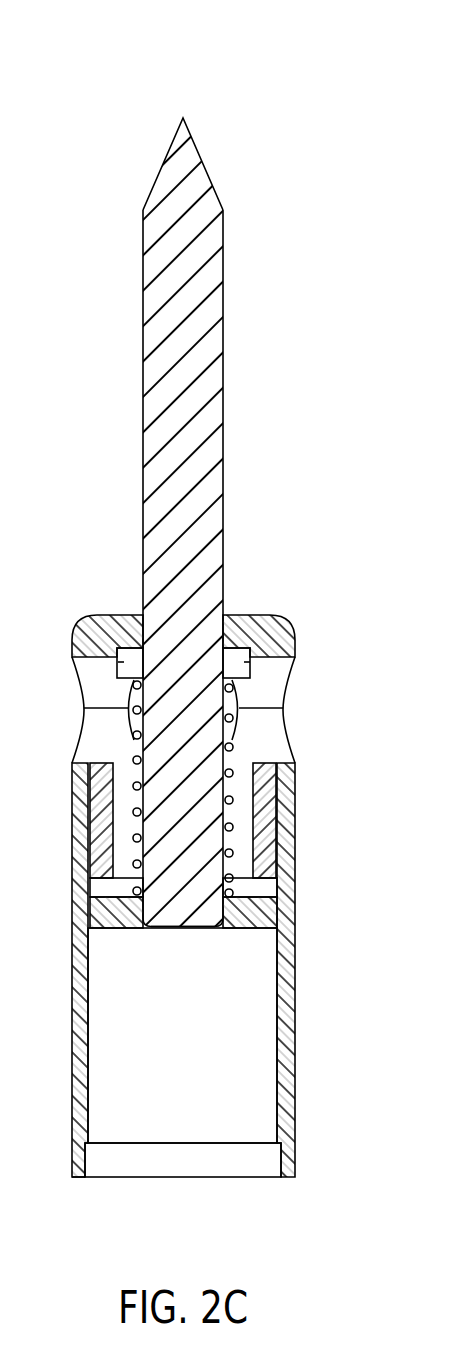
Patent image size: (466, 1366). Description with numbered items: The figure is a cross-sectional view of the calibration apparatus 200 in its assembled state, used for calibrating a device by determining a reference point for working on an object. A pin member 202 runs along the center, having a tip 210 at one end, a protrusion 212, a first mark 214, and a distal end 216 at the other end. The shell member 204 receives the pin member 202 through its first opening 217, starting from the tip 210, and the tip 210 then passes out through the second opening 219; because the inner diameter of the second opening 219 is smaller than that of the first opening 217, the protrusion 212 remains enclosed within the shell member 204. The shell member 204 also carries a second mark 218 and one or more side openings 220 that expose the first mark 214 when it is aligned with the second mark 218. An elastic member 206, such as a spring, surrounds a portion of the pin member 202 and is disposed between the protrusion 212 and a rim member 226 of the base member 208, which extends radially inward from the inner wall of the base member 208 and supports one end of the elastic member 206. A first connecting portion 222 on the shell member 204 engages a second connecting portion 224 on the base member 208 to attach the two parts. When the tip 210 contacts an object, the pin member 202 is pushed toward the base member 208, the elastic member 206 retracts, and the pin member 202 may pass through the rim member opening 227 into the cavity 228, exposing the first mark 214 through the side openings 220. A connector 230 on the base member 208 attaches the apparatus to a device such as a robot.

The calibration apparatus 200 is at (281, 73).
The pin member 202 is at (207, 279).
The tip 210 is at (183, 117).
The shell member 204 is at (111, 627).
The protrusion 212 is at (229, 656).
The first mark 214 is at (250, 663).
The second opening 219 is at (131, 576).
The side openings 220 is at (96, 684).
The second mark 218 is at (85, 708).
The elastic member 206 is at (133, 735).
The first connecting portion 222 is at (267, 785).
The second connecting portion 224 is at (288, 847).
The first opening 217 is at (110, 890).
The rim member 226 is at (257, 912).
The distal end 216 is at (189, 928).
The cavity 228 is at (257, 980).
The rim member opening 227 is at (194, 967).
The connector 230 is at (248, 1170).
The base member 208 is at (80, 1170).